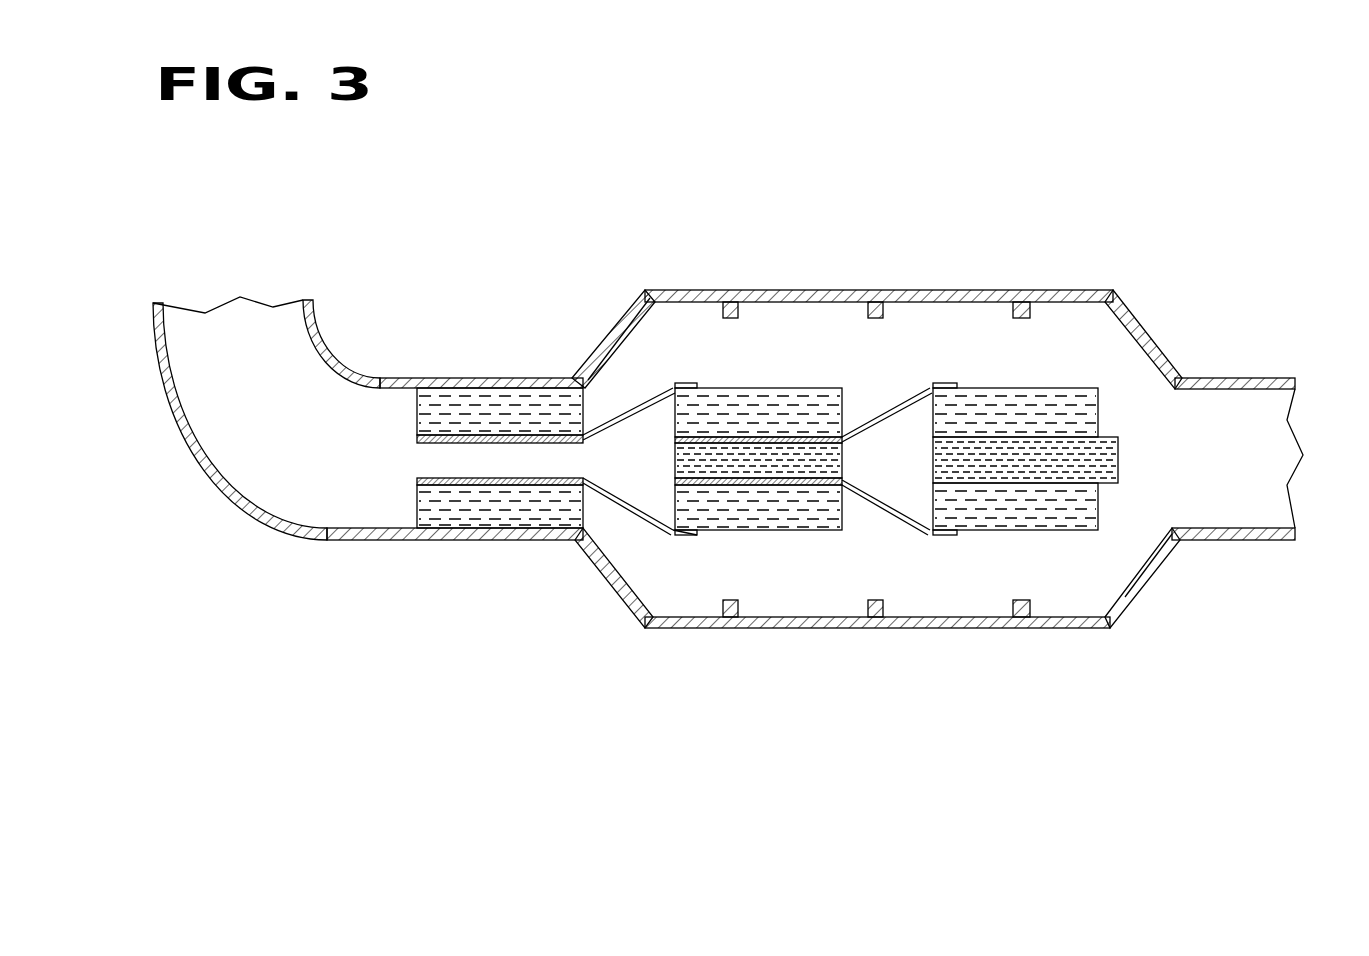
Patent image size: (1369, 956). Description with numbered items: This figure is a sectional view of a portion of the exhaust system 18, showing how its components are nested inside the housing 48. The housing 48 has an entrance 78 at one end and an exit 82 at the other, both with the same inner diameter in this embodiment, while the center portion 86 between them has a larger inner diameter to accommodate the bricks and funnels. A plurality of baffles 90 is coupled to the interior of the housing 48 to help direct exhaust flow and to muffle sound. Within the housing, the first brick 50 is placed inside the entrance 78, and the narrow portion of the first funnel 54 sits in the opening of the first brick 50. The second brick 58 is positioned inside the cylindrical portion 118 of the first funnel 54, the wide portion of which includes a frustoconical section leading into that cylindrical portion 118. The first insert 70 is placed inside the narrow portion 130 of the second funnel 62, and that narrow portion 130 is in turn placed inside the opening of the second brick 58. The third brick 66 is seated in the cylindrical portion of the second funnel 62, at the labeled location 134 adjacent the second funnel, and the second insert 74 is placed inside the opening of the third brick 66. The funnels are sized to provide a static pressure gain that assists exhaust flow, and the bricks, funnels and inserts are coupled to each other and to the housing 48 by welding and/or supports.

The exhaust system 18 is at (573, 226).
The housing 48 is at (1052, 297).
The first brick 50 is at (497, 410).
The first funnel 54 is at (647, 402).
The second brick 58 is at (770, 405).
The second funnel 62 is at (900, 395).
The third brick 66 is at (1062, 412).
The first insert 70 is at (685, 460).
The second insert 74 is at (1005, 463).
The entrance 78 is at (335, 412).
The exit 82 is at (1222, 430).
The center portion 86 is at (819, 582).
The baffles 90 is at (730, 618).
The cylindrical portion 118 is at (688, 385).
The narrow portion 130 is at (790, 483).
The flange 134 is at (950, 386).